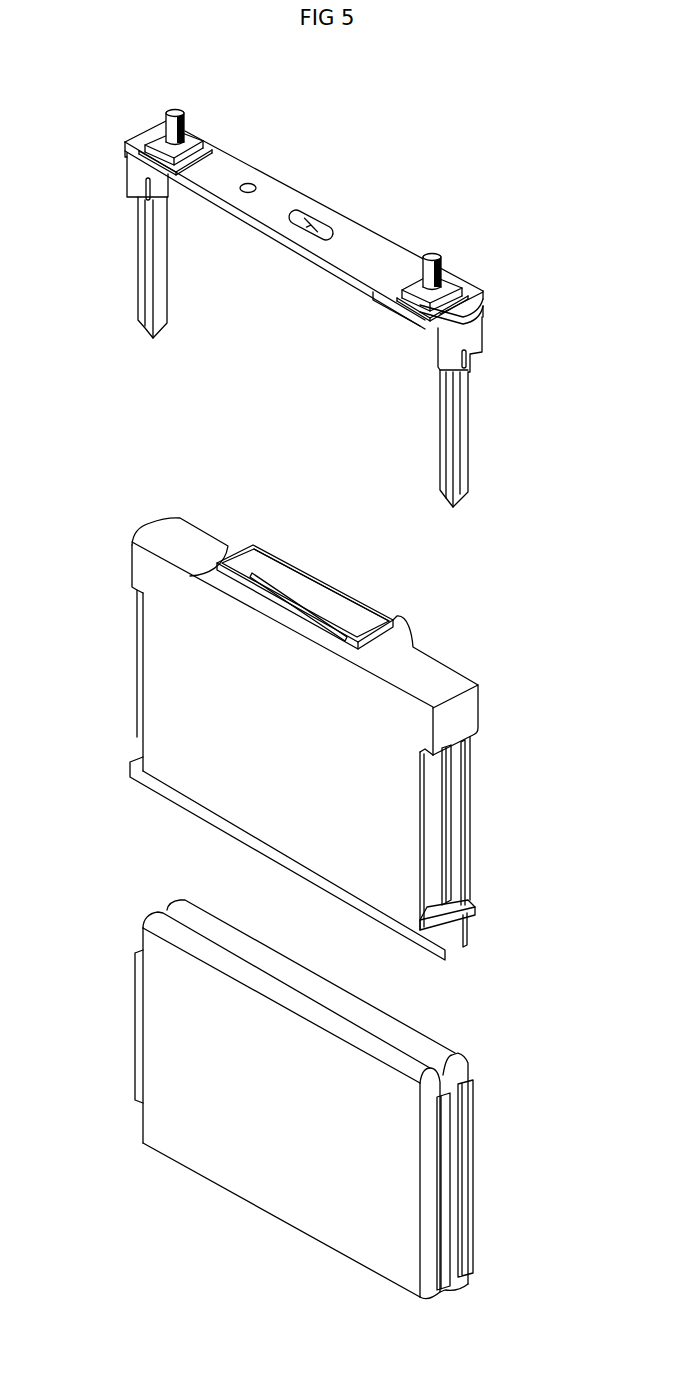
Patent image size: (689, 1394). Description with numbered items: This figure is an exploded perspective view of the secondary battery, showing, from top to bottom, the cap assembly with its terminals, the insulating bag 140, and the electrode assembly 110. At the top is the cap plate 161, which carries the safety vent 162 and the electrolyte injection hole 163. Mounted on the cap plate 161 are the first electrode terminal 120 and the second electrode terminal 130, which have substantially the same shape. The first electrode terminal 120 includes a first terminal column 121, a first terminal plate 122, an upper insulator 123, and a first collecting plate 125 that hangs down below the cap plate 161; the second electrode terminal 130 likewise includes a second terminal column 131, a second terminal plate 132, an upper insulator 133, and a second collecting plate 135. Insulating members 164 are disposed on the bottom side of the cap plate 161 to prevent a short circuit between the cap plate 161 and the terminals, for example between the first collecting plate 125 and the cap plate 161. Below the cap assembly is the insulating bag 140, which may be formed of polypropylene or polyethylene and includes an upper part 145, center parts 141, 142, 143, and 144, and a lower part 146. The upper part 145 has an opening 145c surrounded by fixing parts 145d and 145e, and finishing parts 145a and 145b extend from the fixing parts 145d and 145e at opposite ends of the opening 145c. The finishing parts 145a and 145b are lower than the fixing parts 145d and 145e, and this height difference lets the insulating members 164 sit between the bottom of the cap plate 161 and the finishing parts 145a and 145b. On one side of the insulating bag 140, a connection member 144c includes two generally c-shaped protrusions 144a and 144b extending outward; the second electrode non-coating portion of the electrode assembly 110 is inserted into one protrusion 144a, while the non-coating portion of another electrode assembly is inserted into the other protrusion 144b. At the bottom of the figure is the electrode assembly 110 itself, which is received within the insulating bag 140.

The electrode assembly 110 is at (267, 1190).
The first electrode terminal 120 is at (217, 108).
The first terminal column 121 is at (172, 96).
The first terminal plate 122 is at (192, 140).
The upper insulator 123 is at (226, 150).
The first collecting plate 125 is at (136, 184).
The second electrode terminal 130 is at (465, 254).
The second terminal column 131 is at (425, 250).
The second terminal plate 132 is at (453, 280).
The upper insulator 133 is at (478, 296).
The second collecting plate 135 is at (477, 337).
The insulating bag 140 is at (310, 727).
The center part 141 is at (161, 708).
The center part 142 is at (464, 672).
The center part 143 is at (136, 567).
The center part 144 is at (491, 847).
The protrusion 144a is at (436, 798).
The protrusion 144b is at (459, 782).
The connection member 144c is at (428, 845).
The upper part 145 is at (305, 574).
The finishing part 145a is at (196, 540).
The finishing part 145b is at (424, 669).
The opening 145c is at (284, 578).
The fixing part 145d is at (361, 596).
The fixing part 145e is at (395, 621).
The lower part 146 is at (376, 924).
The cap plate 161 is at (304, 222).
The safety vent 162 is at (323, 218).
The electrolyte injection hole 163 is at (250, 184).
The insulating member 164 is at (124, 153).